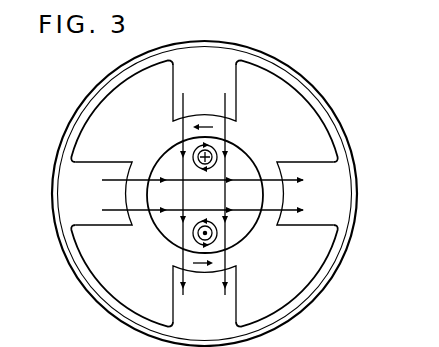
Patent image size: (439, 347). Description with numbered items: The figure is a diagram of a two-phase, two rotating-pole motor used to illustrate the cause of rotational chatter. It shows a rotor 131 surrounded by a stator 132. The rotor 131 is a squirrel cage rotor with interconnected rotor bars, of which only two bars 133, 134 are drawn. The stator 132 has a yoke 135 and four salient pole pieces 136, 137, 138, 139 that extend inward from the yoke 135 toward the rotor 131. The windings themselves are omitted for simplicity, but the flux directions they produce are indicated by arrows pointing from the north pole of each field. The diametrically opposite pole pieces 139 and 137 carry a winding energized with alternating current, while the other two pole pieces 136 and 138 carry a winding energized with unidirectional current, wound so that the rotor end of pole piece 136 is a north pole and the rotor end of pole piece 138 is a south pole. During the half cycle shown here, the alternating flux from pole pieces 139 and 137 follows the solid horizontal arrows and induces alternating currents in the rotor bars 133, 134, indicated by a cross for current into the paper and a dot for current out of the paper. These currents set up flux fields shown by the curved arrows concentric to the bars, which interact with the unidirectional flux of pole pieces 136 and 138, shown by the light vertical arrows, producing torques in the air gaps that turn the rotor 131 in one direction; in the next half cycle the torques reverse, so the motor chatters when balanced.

The rotor 131 is at (214, 204).
The stator 132 is at (207, 42).
The rotor bar 133 is at (213, 151).
The rotor bar 134 is at (198, 238).
The yoke 135 is at (306, 88).
The pole piece 136 is at (216, 78).
The pole piece 137 is at (337, 204).
The pole piece 138 is at (216, 318).
The pole piece 139 is at (100, 204).